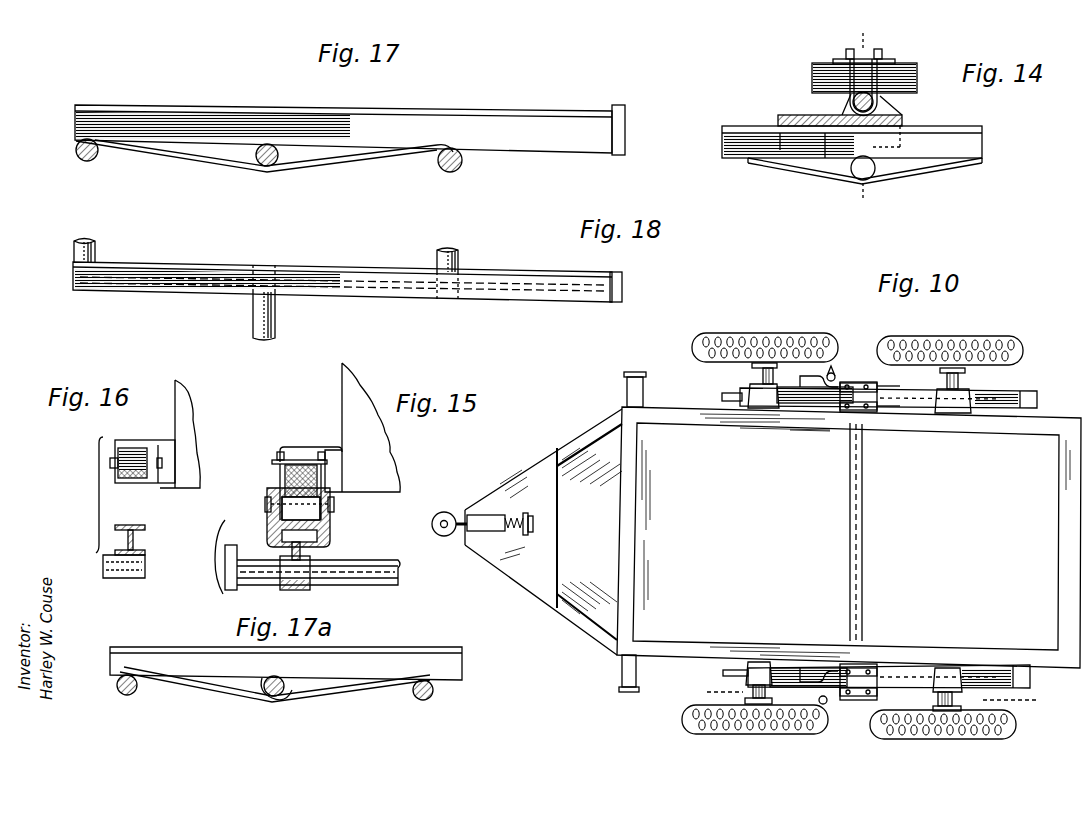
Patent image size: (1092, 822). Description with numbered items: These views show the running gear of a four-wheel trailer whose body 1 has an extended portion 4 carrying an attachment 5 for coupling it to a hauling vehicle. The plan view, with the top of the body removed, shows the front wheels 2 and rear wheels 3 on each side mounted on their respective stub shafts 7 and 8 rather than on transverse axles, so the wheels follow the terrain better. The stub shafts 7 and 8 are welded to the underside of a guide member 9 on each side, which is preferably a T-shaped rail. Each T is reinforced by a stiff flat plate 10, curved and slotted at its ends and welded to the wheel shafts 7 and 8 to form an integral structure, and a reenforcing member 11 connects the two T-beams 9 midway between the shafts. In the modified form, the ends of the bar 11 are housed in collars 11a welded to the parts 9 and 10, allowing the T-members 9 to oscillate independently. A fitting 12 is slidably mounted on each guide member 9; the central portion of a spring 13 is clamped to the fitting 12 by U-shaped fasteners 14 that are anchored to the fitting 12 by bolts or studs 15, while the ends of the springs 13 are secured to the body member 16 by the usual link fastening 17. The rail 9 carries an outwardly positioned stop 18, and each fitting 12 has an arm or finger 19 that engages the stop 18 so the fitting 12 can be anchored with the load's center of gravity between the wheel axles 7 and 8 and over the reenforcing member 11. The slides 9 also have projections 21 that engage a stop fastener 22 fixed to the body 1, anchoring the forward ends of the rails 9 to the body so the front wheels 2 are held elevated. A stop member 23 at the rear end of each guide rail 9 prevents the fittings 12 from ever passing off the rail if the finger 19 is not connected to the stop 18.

In FIG. 10, the body 1 is at (684, 430).
In FIG. 16, the body 1 is at (179, 425).
In FIG. 15, the body 1 is at (348, 431).
In FIG. 10, the front wheels 2 is at (722, 366).
In FIG. 10, the rear wheels 3 is at (1006, 340).
In FIG. 10, the extended portion 4 is at (546, 452).
In FIG. 10, the attachment 5 is at (474, 516).
In FIG. 17, the stub shaft 7 is at (90, 160).
In FIG. 18, the stub shaft 7 is at (96, 248).
In FIG. 16, the stub shaft 7 is at (145, 566).
In FIG. 15, the stub shaft 7 is at (348, 582).
In FIG. 17A, the stub shaft 7 is at (128, 696).
In FIG. 17, the stub shaft 8 is at (446, 172).
In FIG. 18, the stub shaft 8 is at (437, 262).
In FIG. 10, the stub shaft 8 is at (962, 378).
In FIG. 17A, the stub shaft 8 is at (428, 700).
In FIG. 17, the guide member 9 is at (517, 144).
In FIG. 18, the guide member 9 is at (347, 290).
In FIG. 14, the guide member 9 is at (718, 134).
In FIG. 10, the guide member 9 is at (1024, 394).
In FIG. 16, the guide member 9 is at (134, 546).
In FIG. 15, the guide member 9 is at (270, 556).
In FIG. 17A, the guide member 9 is at (374, 658).
In FIG. 17, the flat plate 10 is at (312, 163).
In FIG. 14, the flat plate 10 is at (822, 182).
In FIG. 17A, the flat plate 10 is at (330, 694).
In FIG. 17, the reenforcing member 11 is at (272, 166).
In FIG. 18, the reenforcing member 11 is at (253, 326).
In FIG. 14, the reenforcing member 11 is at (858, 184).
In FIG. 10, the reenforcing member 11 is at (705, 687).
In FIG. 17A, the reenforcing member 11 is at (266, 696).
In FIG. 17A, the collars 11a is at (284, 692).
In FIG. 14, the fitting 12 is at (904, 117).
In FIG. 15, the fitting 12 is at (328, 532).
In FIG. 14, the springs 13 is at (809, 82).
In FIG. 10, the springs 13 is at (814, 403).
In FIG. 16, the springs 13 is at (146, 478).
In FIG. 15, the springs 13 is at (284, 486).
In FIG. 14, the U-shaped fasteners 14 is at (848, 44).
In FIG. 10, the U-shaped fasteners 14 is at (848, 384).
In FIG. 15, the U-shaped fasteners 14 is at (280, 468).
In FIG. 14, the bolts or studs 15 is at (884, 22).
In FIG. 10, the bolts or studs 15 is at (898, 629).
In FIG. 15, the bolts or studs 15 is at (332, 508).
In FIG. 10, the body member 16 is at (740, 424).
In FIG. 16, the link fastening 17 is at (122, 478).
In FIG. 10, the stop 18 is at (812, 379).
In FIG. 10, the arm or finger 19 is at (834, 366).
In FIG. 10, the projections 21 is at (714, 388).
In FIG. 10, the stop fastener 22 is at (627, 392).
In FIG. 17, the stop member 23 is at (624, 132).
In FIG. 18, the stop member 23 is at (622, 297).